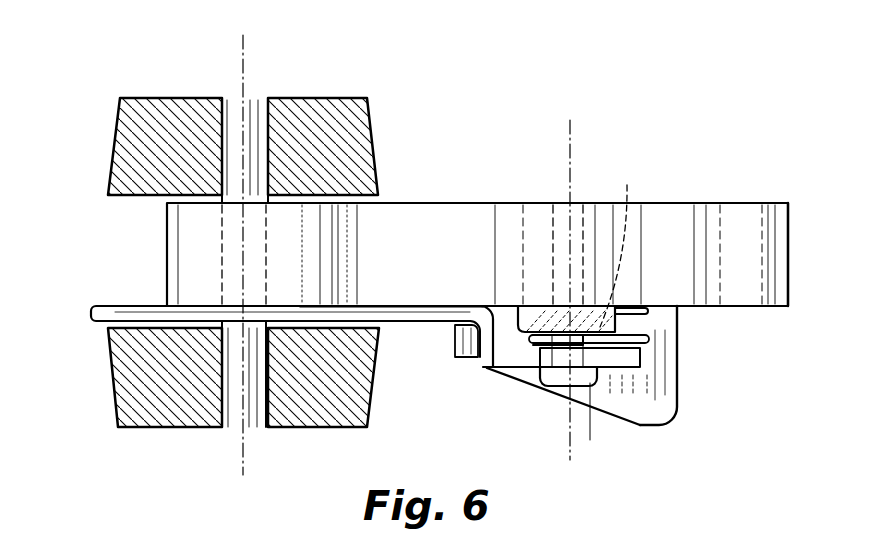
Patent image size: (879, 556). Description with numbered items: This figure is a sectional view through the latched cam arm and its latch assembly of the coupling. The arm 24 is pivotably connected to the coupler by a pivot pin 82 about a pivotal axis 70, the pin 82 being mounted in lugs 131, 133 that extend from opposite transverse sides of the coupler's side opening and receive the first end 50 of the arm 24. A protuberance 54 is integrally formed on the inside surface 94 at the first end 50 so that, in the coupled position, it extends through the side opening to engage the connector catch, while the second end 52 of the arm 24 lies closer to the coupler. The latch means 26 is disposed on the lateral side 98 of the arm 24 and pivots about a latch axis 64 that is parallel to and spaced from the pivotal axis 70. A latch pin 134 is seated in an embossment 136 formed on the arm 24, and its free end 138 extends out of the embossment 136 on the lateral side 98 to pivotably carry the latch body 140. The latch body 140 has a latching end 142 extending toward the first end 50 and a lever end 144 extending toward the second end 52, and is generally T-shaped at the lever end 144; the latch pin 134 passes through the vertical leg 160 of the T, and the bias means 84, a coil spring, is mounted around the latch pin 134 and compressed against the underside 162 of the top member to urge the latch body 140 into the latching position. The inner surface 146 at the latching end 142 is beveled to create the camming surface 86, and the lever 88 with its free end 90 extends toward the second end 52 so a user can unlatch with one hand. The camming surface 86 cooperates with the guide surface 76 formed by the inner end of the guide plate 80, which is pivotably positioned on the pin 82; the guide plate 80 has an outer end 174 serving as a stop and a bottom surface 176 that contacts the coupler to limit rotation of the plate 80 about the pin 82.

The lug 131 is at (150, 120).
The pivotal axis 70 is at (246, 42).
The pivot pin 82 is at (237, 410).
The lug 133 is at (148, 408).
The arm 24 is at (477, 214).
The inside surface 94 is at (413, 220).
The first end 50 is at (142, 254).
The protuberance 54 is at (188, 263).
The second end 52 is at (787, 255).
The lateral side 98 is at (770, 310).
The outer end 174 is at (100, 315).
The bottom surface 176 is at (382, 308).
The guide plate 80 is at (405, 323).
The camming surface 86 is at (488, 370).
The guide surface 76 is at (480, 358).
The latching end 142 is at (512, 318).
The latch pin 134 is at (560, 200).
The latch axis 64 is at (572, 138).
The bias means 84 is at (619, 242).
The embossment 136 is at (607, 308).
The underside 162 is at (657, 328).
The vertical leg 160 is at (640, 358).
The free end 138 is at (553, 380).
The inner surface 146 is at (583, 397).
The lever 88 is at (597, 403).
The latch means 26 is at (717, 372).
The latch body 140 is at (643, 388).
The free end 90 is at (620, 430).
The lever end 144 is at (648, 427).